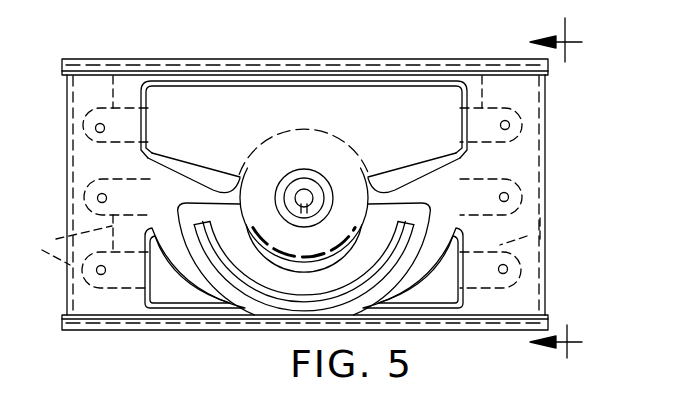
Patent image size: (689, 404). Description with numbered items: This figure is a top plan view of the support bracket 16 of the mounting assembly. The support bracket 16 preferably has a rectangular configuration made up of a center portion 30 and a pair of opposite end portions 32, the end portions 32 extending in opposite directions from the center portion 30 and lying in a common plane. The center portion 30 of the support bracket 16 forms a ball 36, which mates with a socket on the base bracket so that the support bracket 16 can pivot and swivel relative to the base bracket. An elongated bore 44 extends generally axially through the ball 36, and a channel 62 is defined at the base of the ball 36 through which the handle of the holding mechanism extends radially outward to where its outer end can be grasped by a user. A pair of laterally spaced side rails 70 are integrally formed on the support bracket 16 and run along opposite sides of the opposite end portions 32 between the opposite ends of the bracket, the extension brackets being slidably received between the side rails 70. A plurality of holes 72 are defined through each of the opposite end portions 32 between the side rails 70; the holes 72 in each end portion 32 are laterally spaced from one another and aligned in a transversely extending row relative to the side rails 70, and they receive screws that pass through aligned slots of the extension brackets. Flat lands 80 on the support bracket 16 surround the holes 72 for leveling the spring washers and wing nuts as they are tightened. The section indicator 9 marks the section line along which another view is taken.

The support bracket 16 is at (310, 55).
The side rails 70 is at (190, 62).
The flat lands 80 is at (119, 60).
The holes 72 is at (100, 193).
The opposite end portions 32 is at (82, 178).
The ball 36 is at (247, 153).
The center portion 30 is at (340, 152).
The elongated bore 44 is at (306, 194).
The channel 62 is at (268, 282).
The section line 9- 9 is at (556, 194).